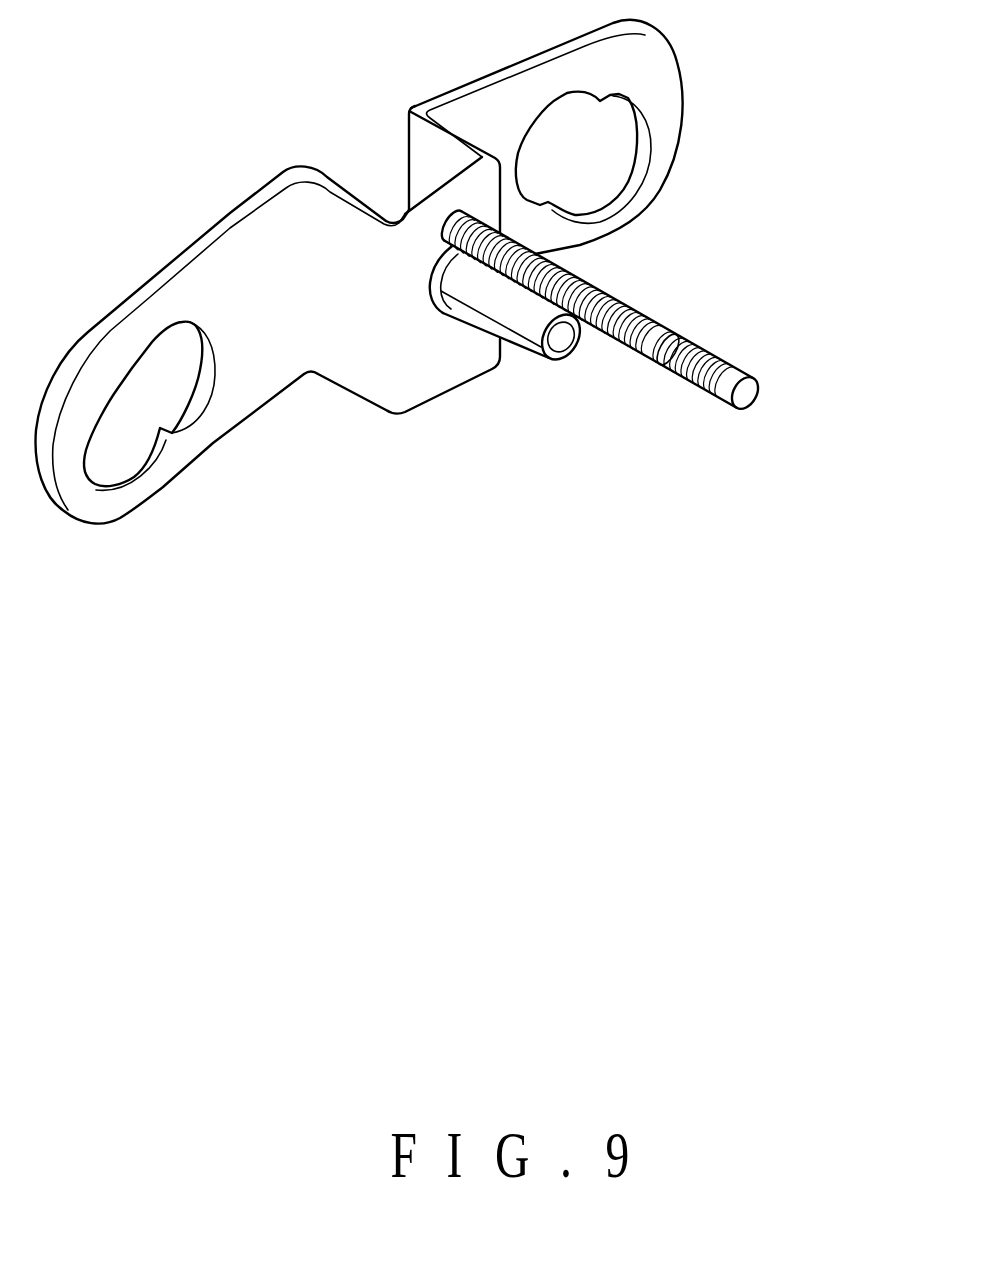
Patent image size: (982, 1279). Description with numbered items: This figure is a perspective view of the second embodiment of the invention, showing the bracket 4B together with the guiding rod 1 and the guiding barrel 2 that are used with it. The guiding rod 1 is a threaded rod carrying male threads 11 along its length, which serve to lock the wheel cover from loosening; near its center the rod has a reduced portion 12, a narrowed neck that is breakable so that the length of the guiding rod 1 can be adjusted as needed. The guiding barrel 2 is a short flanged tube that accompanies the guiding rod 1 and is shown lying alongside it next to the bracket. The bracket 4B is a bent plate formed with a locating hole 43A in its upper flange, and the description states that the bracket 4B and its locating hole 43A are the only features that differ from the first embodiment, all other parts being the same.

The guiding rod 1 is at (757, 396).
The male threads 11 is at (572, 272).
The reduced portion 12 is at (670, 337).
The guiding barrel 2 is at (540, 325).
The bracket 4B is at (217, 422).
The locating hole 43A is at (610, 158).